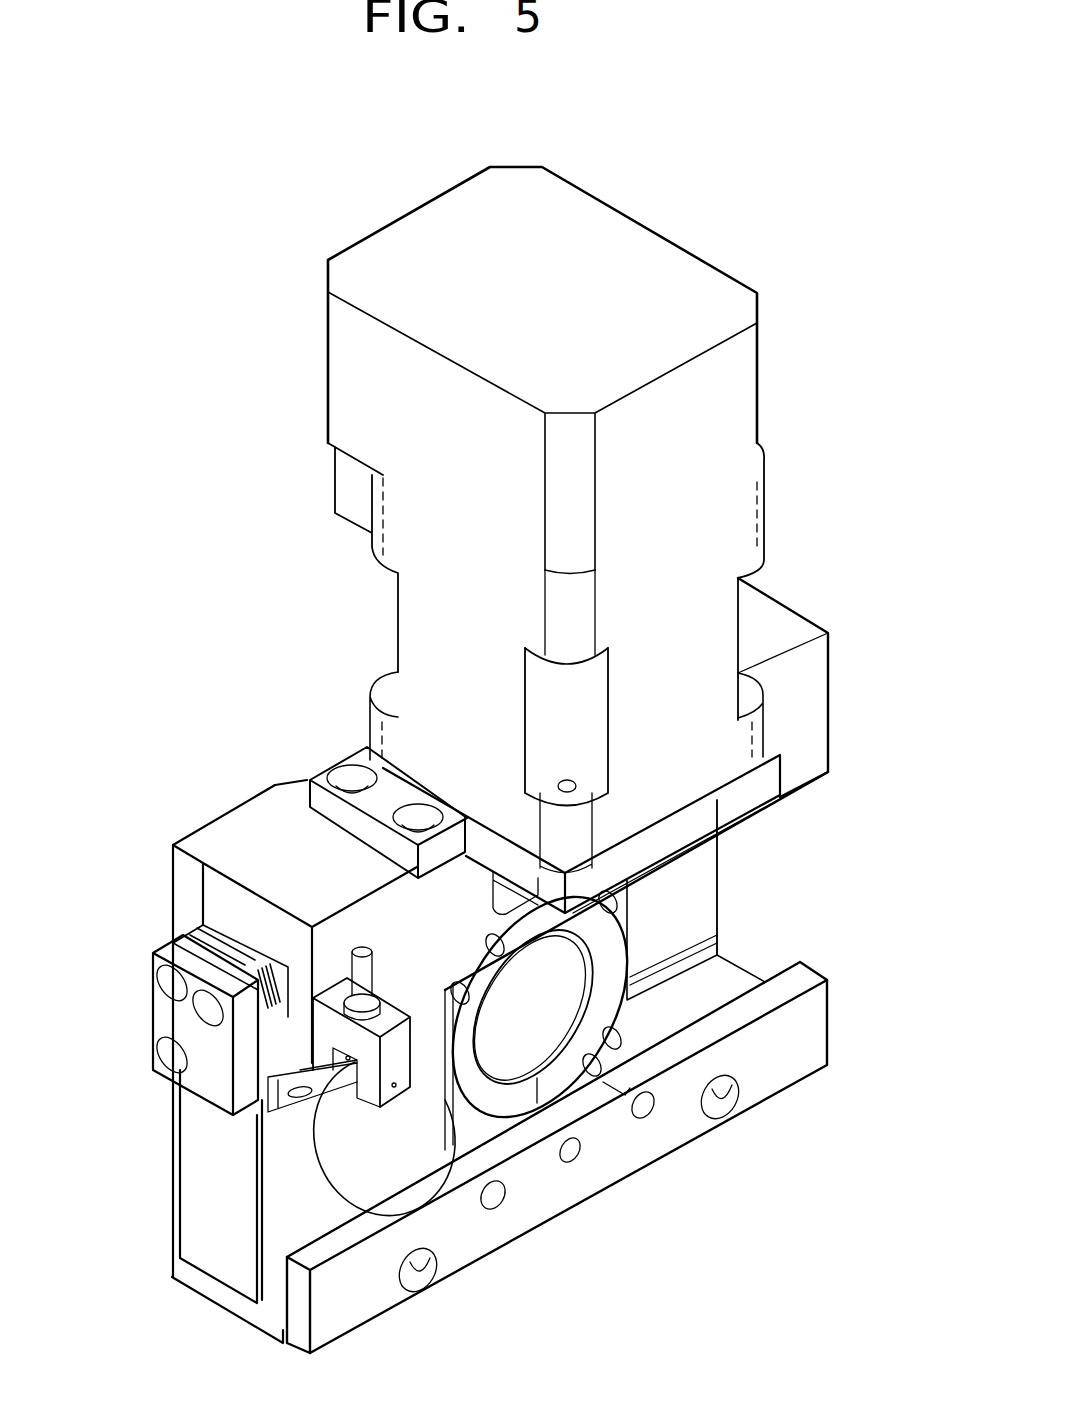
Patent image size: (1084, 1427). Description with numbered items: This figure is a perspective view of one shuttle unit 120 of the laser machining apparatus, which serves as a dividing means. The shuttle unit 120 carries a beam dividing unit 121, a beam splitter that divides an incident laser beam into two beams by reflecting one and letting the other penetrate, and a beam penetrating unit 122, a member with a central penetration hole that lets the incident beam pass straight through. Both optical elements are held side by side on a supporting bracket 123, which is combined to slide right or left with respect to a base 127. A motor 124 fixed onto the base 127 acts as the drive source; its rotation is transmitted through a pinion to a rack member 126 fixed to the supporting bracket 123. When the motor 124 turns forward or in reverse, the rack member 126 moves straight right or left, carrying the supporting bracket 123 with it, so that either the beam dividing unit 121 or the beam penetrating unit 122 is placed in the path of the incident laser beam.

The shuttle unit 120 is at (173, 293).
The beam dividing unit 121 is at (535, 1007).
The beam penetrating unit 122 is at (350, 1138).
The supporting bracket 123 is at (207, 1175).
The motor 124 is at (668, 267).
The rack member 126 is at (268, 983).
The base 127 is at (790, 710).